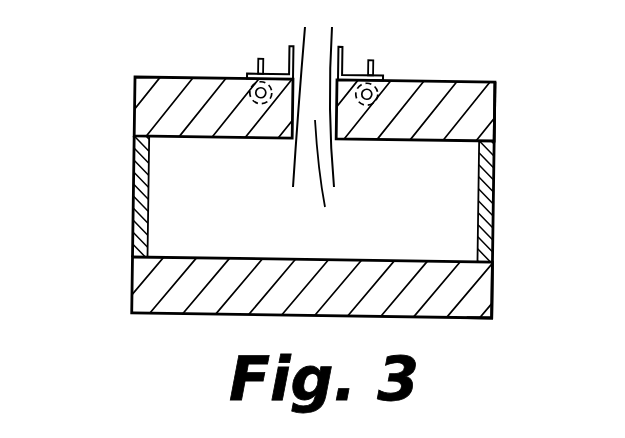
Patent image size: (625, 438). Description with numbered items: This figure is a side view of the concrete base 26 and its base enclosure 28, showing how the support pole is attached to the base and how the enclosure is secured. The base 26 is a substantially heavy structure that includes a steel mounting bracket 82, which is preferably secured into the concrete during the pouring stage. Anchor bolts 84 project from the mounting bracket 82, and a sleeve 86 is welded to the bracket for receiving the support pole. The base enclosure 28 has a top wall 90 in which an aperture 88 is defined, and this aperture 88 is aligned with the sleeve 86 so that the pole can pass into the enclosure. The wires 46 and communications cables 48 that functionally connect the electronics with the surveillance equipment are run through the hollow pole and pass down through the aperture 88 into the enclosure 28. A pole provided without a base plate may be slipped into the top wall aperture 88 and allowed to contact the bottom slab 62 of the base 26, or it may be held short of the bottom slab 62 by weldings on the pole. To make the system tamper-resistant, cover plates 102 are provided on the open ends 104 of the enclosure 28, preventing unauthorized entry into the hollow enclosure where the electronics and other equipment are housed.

The concrete base 26 is at (131, 83).
The base enclosure 28 is at (131, 284).
The wires 46 is at (334, 181).
The communications cables 48 is at (297, 172).
The bottom slab 62 is at (492, 313).
The steel mounting bracket 82 is at (349, 62).
The anchor bolts 84 is at (255, 60).
The sleeve 86 is at (289, 48).
The aperture 88 is at (327, 180).
The top wall 90 is at (496, 83).
The cover plates 102 is at (149, 205).
The open ends 104 is at (134, 186).